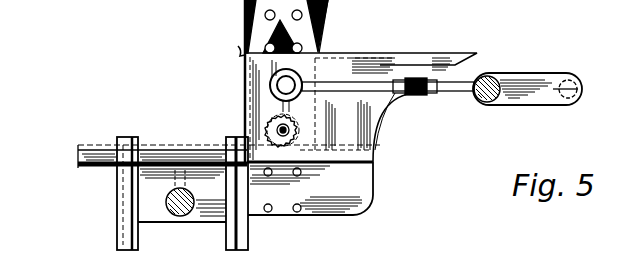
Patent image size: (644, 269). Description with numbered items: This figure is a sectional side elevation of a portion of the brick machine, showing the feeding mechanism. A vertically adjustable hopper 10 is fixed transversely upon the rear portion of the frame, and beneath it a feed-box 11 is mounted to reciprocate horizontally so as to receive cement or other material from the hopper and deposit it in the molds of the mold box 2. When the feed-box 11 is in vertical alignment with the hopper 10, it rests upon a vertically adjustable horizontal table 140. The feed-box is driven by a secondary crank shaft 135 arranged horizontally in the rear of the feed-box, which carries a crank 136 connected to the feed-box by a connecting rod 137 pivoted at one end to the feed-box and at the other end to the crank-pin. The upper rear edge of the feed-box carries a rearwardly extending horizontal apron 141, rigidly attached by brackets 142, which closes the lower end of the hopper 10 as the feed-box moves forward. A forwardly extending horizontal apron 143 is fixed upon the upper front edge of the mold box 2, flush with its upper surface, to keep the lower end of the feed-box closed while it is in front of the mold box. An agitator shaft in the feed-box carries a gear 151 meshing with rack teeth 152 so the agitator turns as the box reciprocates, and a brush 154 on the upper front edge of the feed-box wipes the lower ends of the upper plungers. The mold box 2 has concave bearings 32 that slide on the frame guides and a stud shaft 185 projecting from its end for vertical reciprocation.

The mold box 2 is at (158, 218).
The hopper 10 is at (320, 22).
The feed-box 11 is at (250, 104).
The concave bearings 32 is at (249, 243).
The secondary crank shaft 135 is at (492, 78).
The crank 136 is at (549, 102).
The connecting rod 137 is at (439, 94).
The table 140 is at (309, 214).
The apron 141 is at (382, 56).
The brackets 142 is at (384, 100).
The apron 143 is at (77, 168).
The gear 151 is at (268, 133).
The rack teeth 152 is at (373, 161).
The brush 154 is at (238, 52).
The stud shaft 185 is at (186, 217).